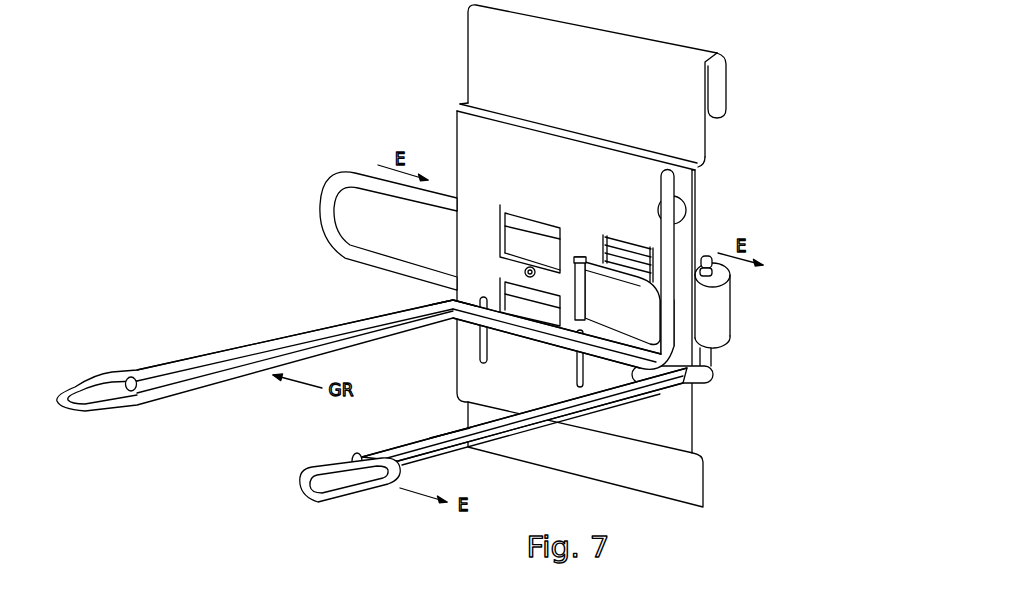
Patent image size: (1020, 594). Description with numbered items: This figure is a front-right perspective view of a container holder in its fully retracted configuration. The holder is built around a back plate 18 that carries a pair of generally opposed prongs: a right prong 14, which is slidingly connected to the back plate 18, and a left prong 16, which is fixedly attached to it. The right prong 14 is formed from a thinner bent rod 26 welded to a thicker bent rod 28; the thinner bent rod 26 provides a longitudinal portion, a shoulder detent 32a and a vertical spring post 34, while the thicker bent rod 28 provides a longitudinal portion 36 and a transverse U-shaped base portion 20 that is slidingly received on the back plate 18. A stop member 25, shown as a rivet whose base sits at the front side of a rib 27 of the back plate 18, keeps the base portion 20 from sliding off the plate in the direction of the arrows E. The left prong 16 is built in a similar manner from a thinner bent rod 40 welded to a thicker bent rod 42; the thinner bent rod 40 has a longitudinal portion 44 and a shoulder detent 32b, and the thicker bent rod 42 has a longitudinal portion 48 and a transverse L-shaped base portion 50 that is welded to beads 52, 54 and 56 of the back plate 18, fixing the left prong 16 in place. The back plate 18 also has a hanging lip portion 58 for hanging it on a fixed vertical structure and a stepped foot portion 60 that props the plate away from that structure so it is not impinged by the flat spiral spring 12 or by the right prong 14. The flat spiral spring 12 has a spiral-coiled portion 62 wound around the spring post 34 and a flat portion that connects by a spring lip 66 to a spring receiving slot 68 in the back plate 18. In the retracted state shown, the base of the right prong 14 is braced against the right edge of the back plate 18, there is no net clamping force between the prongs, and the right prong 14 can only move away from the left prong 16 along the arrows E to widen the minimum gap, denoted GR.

The flat spiral spring 12 is at (733, 323).
The right prong 14 is at (454, 452).
The left prong 16 is at (359, 389).
The back plate 18 is at (506, 162).
The U-shaped base portion 20 is at (447, 200).
The stop member 25 is at (522, 273).
The thinner bent rod 26 is at (457, 447).
The rib 27 is at (545, 267).
The thicker bent rod 28 is at (403, 438).
The shoulder detent 32a is at (307, 473).
The shoulder detent 32b is at (105, 410).
The vertical spring post 34 is at (709, 254).
The longitudinal portion 36 is at (362, 397).
The thinner bent rod 40 is at (210, 385).
The thicker bent rod 42 is at (230, 348).
The longitudinal portion 44 is at (308, 352).
The longitudinal portion 48 is at (287, 342).
The L-shaped base portion 50 is at (638, 370).
The bead 52 is at (488, 360).
The bead 54 is at (578, 357).
The bead 56 is at (657, 197).
The hanging lip portion 58 is at (727, 88).
The stepped foot portion 60 is at (697, 483).
The spiral-coiled portion 62 is at (700, 310).
The spring lip 66 is at (602, 310).
The spring receiving slot 68 is at (578, 258).